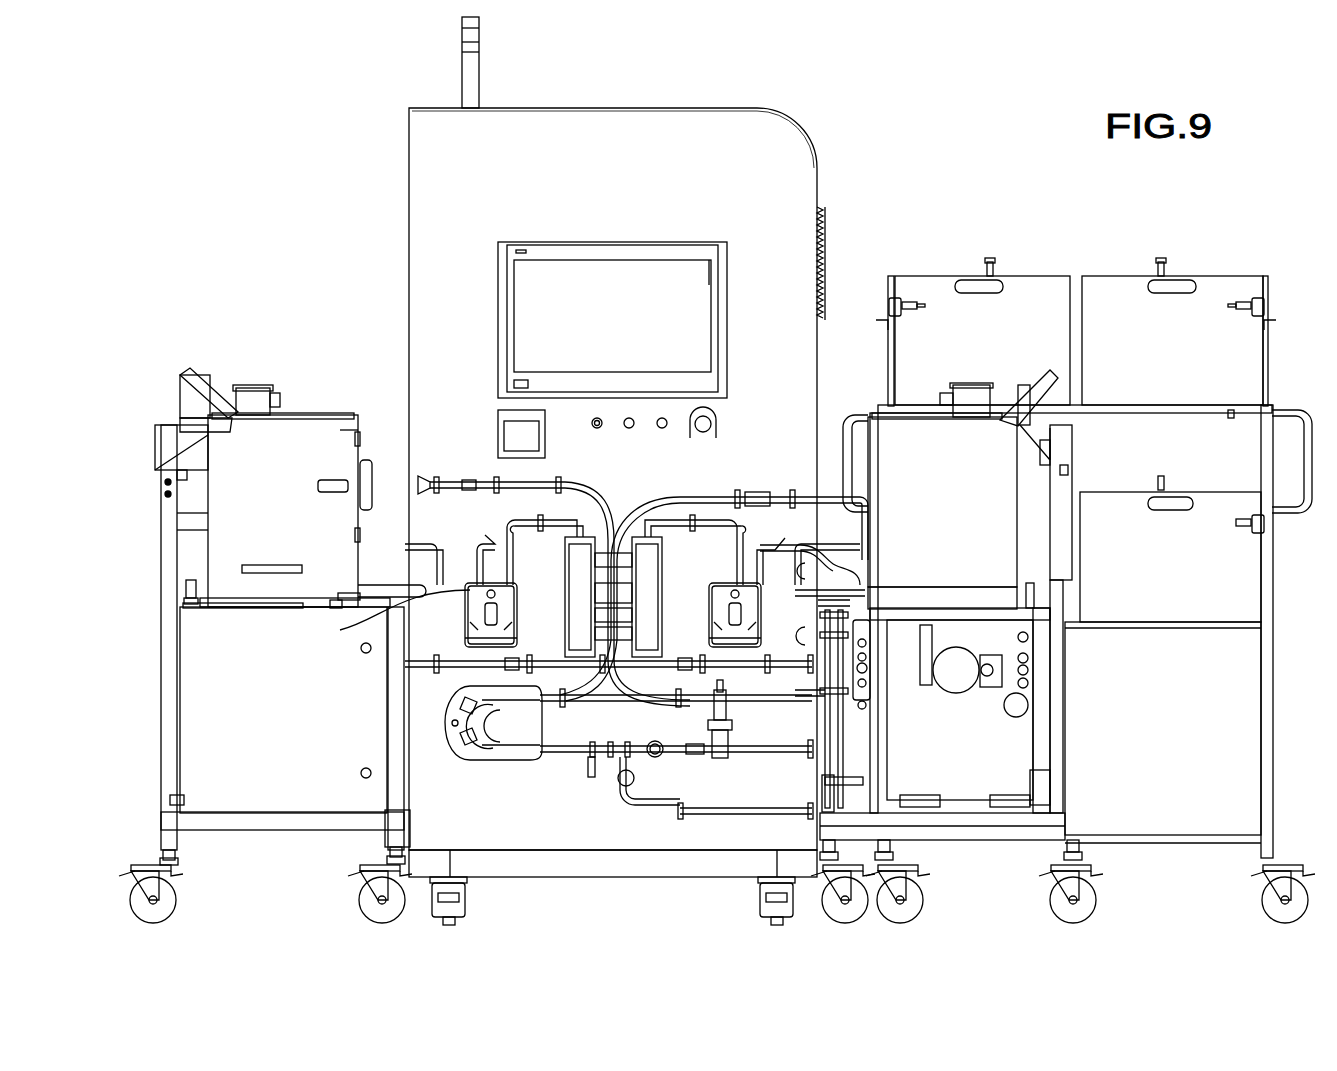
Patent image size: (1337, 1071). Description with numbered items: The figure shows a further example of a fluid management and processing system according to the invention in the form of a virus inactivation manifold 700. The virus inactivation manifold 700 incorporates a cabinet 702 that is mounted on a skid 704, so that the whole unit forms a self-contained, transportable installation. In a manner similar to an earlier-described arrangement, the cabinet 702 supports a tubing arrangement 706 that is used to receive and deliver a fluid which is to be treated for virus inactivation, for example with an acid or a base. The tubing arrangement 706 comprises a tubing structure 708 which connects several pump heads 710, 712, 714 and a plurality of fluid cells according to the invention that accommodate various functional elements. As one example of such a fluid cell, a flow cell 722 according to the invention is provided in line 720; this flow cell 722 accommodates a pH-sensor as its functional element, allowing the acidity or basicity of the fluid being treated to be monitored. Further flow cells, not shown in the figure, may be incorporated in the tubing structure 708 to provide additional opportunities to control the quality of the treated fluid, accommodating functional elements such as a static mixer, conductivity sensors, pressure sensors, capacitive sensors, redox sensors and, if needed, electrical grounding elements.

The virus inactivation manifold 700 is at (866, 126).
The cabinet 702 is at (590, 90).
The skid 704 is at (595, 888).
The tubing arrangement 706 is at (675, 475).
The tubing structure 708 is at (540, 775).
The pump head 710 is at (462, 615).
The pump head 712 is at (452, 745).
The pump head 714 is at (715, 612).
The line 720 is at (678, 760).
The flow cell 722 is at (720, 765).